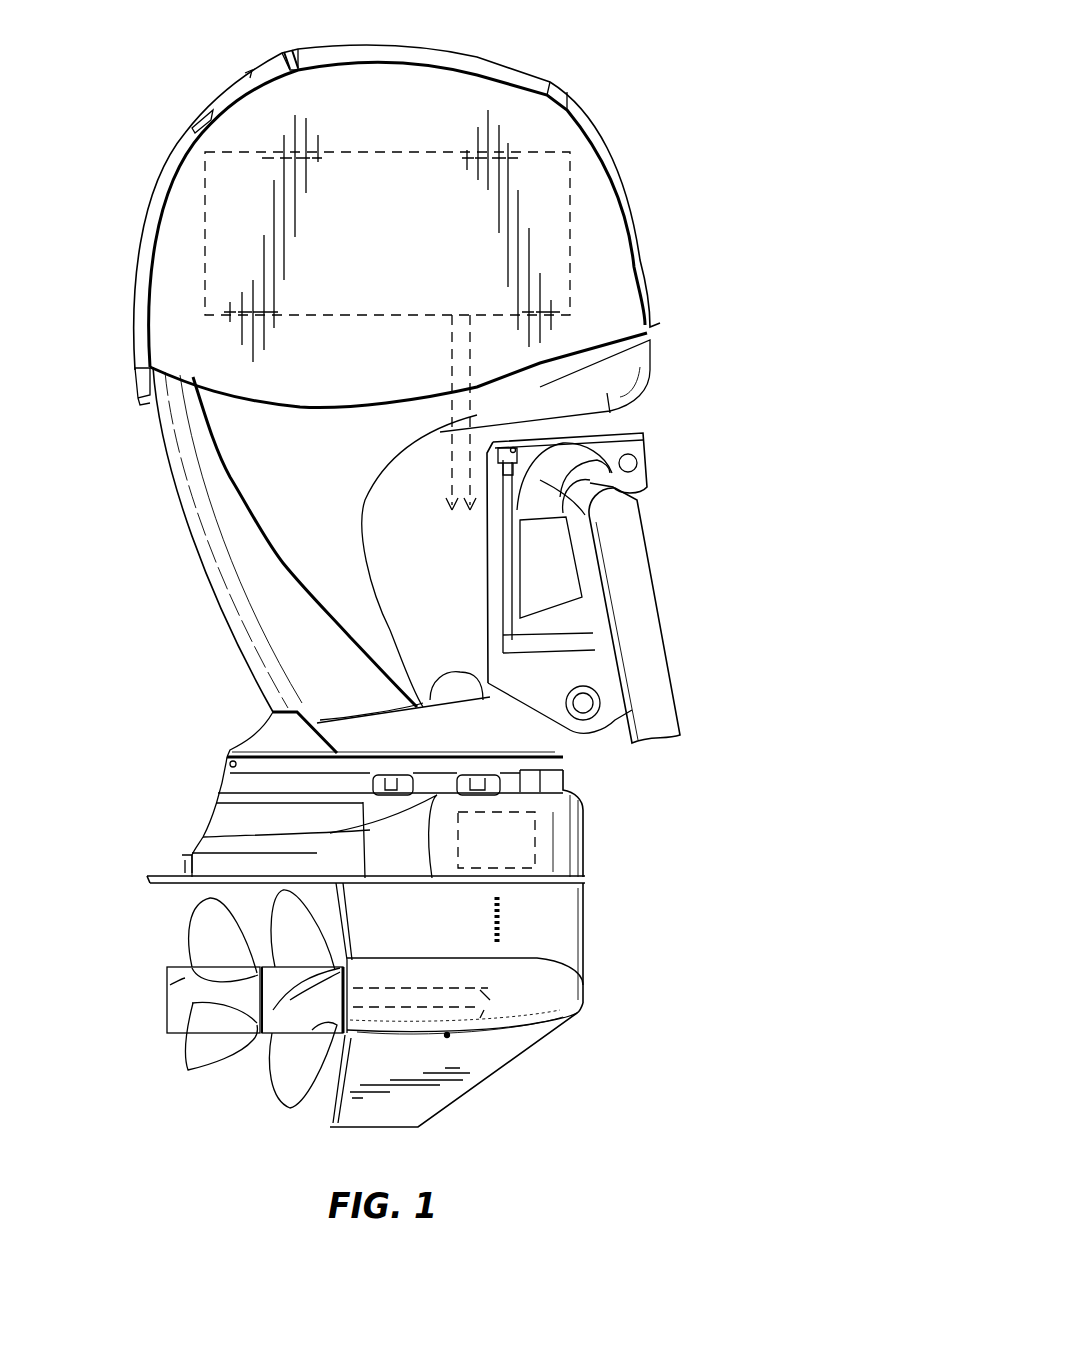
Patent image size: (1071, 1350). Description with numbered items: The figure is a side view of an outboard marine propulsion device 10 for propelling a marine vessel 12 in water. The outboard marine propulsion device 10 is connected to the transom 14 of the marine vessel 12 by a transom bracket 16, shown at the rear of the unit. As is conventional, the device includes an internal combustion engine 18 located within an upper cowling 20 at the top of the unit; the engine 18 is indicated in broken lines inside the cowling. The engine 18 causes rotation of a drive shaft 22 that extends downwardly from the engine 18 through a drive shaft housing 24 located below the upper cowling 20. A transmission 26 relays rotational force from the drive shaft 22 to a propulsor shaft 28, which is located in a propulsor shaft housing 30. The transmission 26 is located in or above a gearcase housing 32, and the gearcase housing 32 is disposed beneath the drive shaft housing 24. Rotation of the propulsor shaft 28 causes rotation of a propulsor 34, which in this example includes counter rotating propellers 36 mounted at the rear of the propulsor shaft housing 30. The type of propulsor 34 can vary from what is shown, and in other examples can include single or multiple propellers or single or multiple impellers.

The outboard marine propulsion device 10 is at (650, 60).
The marine vessel 12 is at (720, 570).
The transom 14 is at (657, 690).
The transom bracket 16 is at (593, 497).
The internal combustion engine 18 is at (575, 200).
The upper cowling 20 is at (645, 285).
The drive shaft 22 is at (445, 373).
The drive shaft housing 24 is at (202, 533).
The transmission 26 is at (545, 842).
The propulsor shaft 28 is at (453, 990).
The propulsor shaft housing 30 is at (590, 987).
The gearcase housing 32 is at (570, 903).
The propulsor 34 is at (137, 1033).
The counter rotating propellers 36 is at (185, 980).